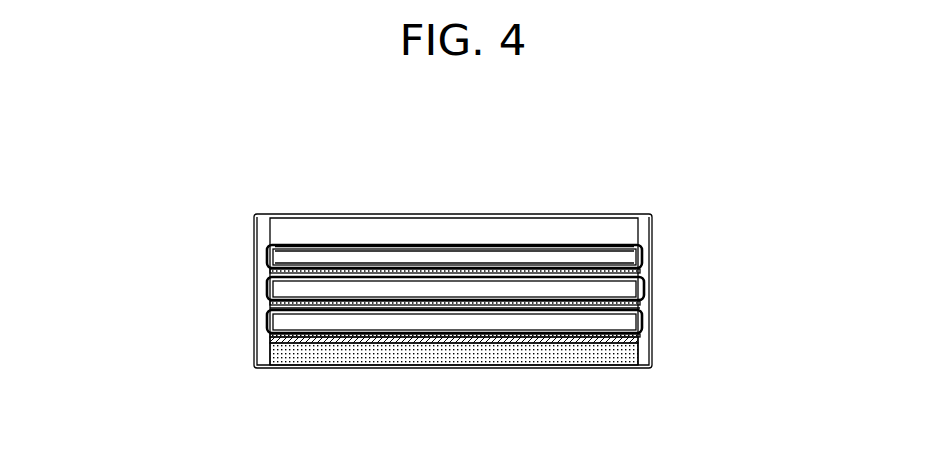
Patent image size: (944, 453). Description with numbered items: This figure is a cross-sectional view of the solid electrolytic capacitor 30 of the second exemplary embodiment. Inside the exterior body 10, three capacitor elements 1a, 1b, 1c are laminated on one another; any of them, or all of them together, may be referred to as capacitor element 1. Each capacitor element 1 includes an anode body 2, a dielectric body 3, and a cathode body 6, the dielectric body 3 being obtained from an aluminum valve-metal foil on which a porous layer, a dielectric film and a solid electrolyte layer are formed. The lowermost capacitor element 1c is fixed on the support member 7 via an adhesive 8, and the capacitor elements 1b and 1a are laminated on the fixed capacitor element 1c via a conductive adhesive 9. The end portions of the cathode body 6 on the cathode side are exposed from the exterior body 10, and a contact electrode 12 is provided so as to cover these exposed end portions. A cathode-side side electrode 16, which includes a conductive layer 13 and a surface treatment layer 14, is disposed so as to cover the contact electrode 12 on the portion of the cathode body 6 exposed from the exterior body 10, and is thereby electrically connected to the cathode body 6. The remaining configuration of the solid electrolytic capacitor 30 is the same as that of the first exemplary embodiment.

The capacitor element 1 is at (454, 267).
The capacitor element 1a is at (337, 258).
The capacitor element 1b is at (539, 290).
The capacitor element 1c is at (597, 318).
The anode body 2 is at (485, 152).
The dielectric body 3 is at (511, 247).
The cathode body 6 is at (547, 245).
The support member 7 is at (490, 353).
The adhesive 8 is at (392, 338).
The conductive adhesive 9 is at (337, 308).
The exterior body 10 is at (377, 237).
The contact electrode 12 is at (270, 287).
The conductive layer 13 is at (263, 272).
The surface treatment layer 14 is at (260, 246).
The cathode-side side electrode 16 is at (462, 254).
The solid electrolytic capacitor 30 is at (454, 446).